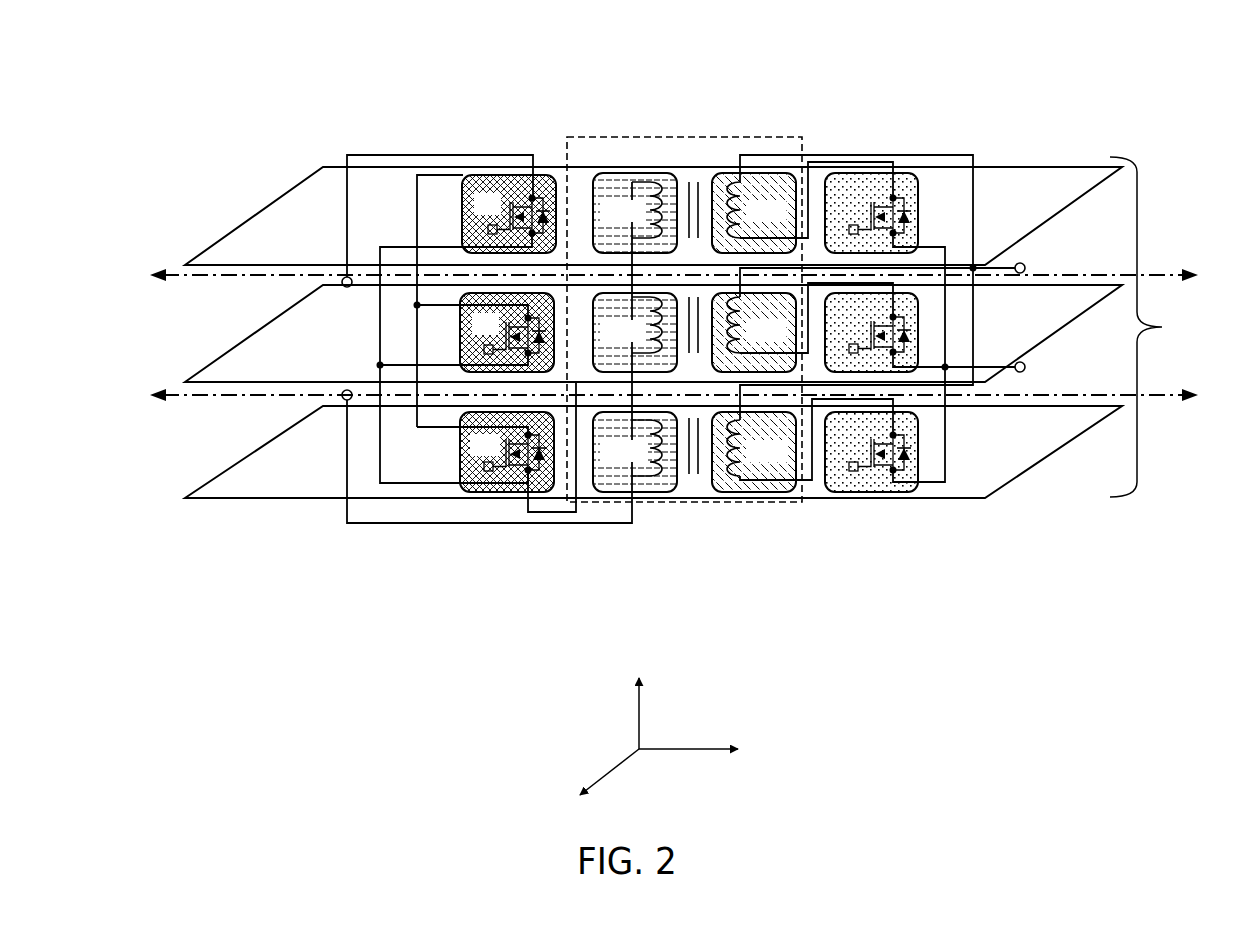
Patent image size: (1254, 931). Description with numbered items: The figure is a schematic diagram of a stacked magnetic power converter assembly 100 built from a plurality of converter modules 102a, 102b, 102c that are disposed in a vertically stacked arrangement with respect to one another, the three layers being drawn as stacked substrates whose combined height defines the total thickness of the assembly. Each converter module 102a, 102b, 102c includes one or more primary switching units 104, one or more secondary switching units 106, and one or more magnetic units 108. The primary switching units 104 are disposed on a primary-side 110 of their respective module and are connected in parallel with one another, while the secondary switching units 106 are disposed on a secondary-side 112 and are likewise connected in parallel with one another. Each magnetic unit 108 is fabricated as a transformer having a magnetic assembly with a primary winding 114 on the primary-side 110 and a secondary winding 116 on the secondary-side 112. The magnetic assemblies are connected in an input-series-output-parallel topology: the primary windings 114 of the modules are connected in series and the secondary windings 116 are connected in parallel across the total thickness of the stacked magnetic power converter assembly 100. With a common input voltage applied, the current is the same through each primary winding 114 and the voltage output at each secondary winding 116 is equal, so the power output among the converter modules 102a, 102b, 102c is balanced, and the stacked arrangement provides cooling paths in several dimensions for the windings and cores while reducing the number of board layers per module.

The stacked magnetic power converter assembly 100 is at (237, 105).
The converter module 102a is at (261, 227).
The converter module 102b is at (238, 360).
The converter module 102c is at (241, 475).
The primary switching unit 104 is at (538, 170).
The secondary switching unit 106 is at (913, 171).
The magnetic unit 108 is at (697, 128).
The primary-side 110 is at (445, 358).
The secondary-side 112 is at (909, 363).
The primary winding 114 is at (651, 177).
The secondary winding 116 is at (738, 180).